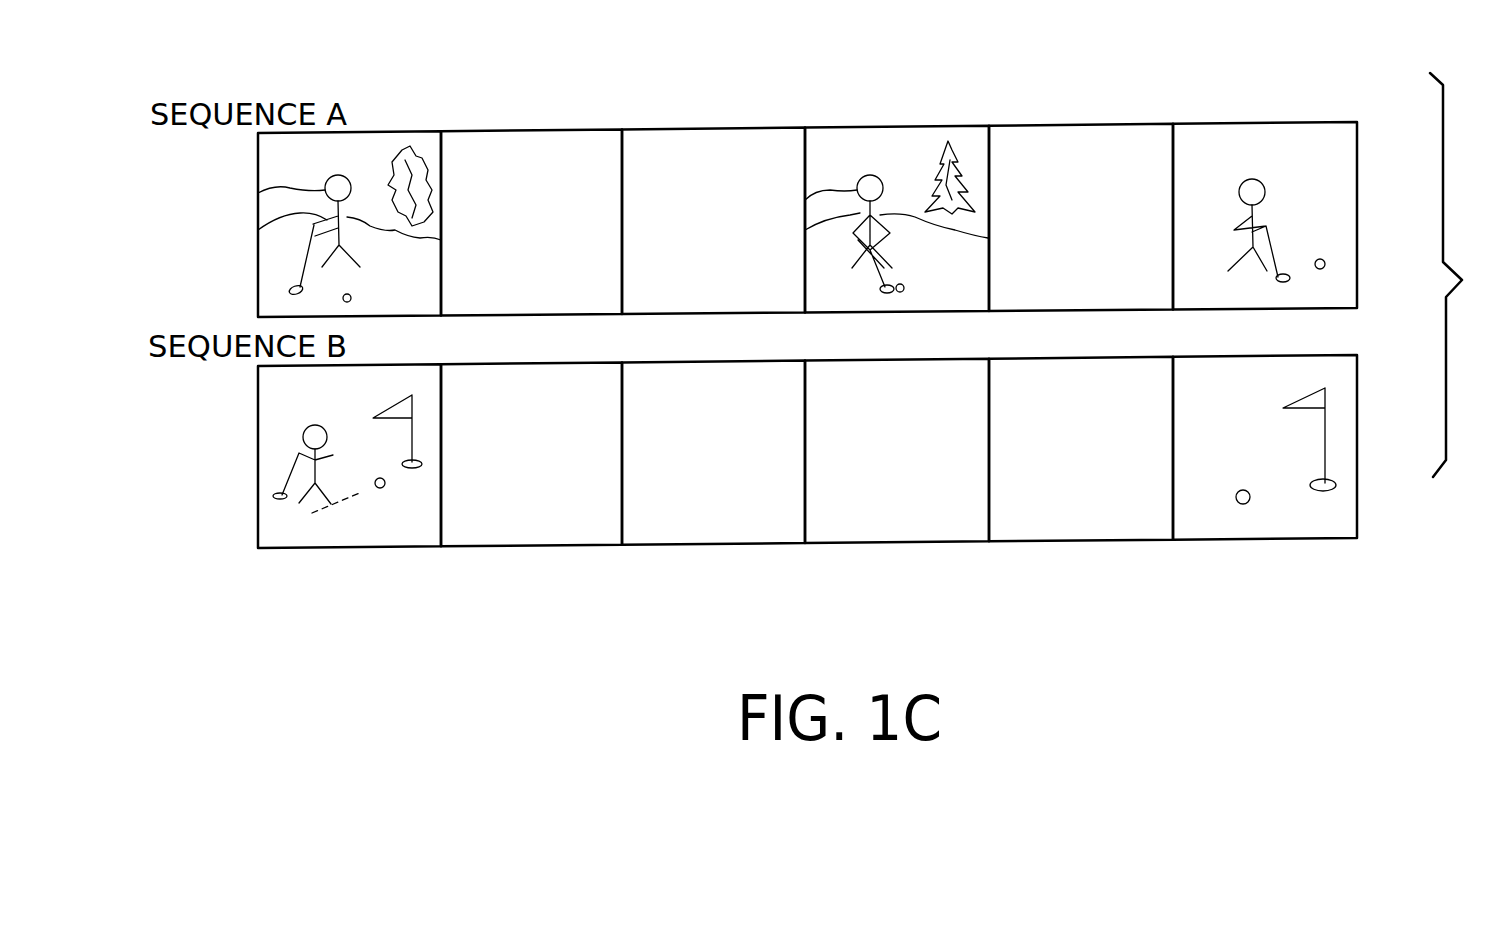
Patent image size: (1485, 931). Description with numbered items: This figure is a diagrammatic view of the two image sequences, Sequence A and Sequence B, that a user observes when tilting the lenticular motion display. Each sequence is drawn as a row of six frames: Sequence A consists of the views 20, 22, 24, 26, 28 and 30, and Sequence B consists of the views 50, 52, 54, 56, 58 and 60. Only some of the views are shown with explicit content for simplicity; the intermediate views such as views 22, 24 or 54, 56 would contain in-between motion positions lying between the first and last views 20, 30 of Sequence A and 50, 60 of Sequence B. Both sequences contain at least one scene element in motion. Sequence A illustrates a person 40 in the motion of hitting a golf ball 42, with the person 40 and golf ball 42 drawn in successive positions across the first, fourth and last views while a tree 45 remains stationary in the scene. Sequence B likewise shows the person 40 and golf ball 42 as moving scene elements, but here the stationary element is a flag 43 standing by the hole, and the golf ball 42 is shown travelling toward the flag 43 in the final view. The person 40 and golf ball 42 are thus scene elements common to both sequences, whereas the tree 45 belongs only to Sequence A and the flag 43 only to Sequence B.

The view 20 is at (398, 133).
The view 22 is at (555, 130).
The view 24 is at (720, 128).
The view 26 is at (922, 127).
The view 28 is at (1080, 125).
The view 30 is at (1252, 123).
The person 40 is at (258, 193).
The golf ball 42 is at (352, 295).
The flag 43 is at (415, 432).
The tree 45 is at (433, 175).
The view 50 is at (378, 547).
The view 52 is at (553, 545).
The view 54 is at (746, 543).
The view 56 is at (920, 542).
The view 58 is at (1080, 542).
The view 60 is at (1242, 540).